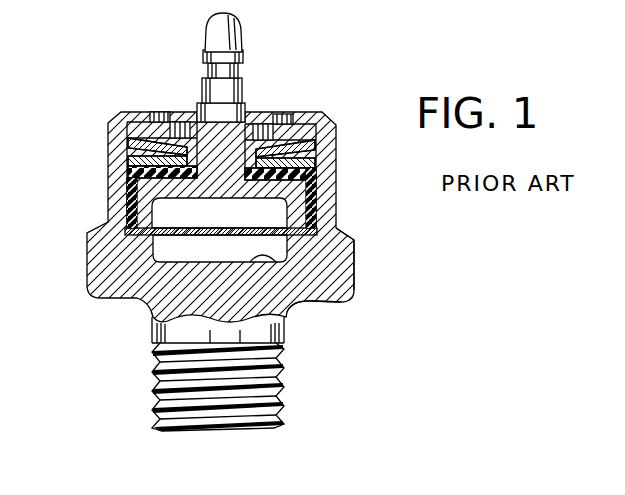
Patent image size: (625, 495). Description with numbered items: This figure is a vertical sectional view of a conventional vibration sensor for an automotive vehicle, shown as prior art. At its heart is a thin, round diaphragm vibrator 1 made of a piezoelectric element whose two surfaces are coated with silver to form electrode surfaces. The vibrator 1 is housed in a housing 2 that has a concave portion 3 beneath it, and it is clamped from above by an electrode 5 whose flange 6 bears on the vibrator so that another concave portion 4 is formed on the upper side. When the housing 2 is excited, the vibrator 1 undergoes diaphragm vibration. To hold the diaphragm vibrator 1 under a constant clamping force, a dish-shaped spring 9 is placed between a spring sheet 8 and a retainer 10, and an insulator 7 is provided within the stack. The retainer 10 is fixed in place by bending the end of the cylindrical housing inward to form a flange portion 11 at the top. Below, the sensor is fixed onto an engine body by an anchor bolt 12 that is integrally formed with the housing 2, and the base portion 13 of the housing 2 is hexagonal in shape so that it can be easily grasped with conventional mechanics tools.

The diaphragm vibrator 1 is at (320, 229).
The housing 2 is at (87, 256).
The concave portion 3 is at (310, 300).
The concave portion 4 is at (290, 215).
The electrode 5 is at (245, 112).
The flange 6 is at (118, 203).
The insulator 7 is at (320, 199).
The spring sheet 8 is at (317, 168).
The dish-shaped spring 9 is at (118, 151).
The retainer 10 is at (166, 128).
The flange portion 11 is at (142, 113).
The anchor bolt 12 is at (279, 381).
The base portion 13 is at (355, 263).